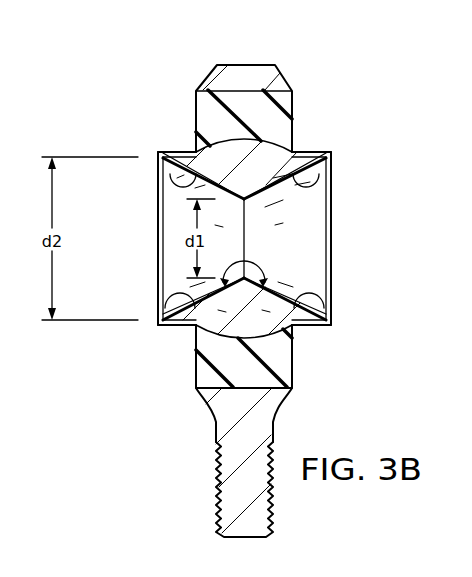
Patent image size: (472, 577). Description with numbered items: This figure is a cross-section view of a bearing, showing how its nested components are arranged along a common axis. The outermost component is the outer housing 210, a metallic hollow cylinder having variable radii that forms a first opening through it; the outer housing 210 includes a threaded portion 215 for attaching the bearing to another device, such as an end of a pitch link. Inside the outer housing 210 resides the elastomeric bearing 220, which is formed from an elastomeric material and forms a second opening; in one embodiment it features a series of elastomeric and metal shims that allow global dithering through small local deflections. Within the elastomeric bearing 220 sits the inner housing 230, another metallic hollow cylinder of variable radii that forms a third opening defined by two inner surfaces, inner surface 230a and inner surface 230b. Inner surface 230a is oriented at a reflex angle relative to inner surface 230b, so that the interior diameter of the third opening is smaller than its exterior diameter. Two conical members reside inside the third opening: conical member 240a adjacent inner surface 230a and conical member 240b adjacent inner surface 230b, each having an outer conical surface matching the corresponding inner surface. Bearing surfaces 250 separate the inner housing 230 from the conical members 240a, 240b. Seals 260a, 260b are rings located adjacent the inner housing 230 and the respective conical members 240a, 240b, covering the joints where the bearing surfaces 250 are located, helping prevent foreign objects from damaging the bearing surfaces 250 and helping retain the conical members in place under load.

The outer housing 210 is at (222, 420).
The threaded portion 215 is at (218, 502).
The elastomeric bearing 220 is at (203, 370).
The inner housing 230 is at (258, 327).
The inner surface 230a is at (163, 298).
The inner surface 230b is at (328, 298).
The conical member 240a is at (175, 253).
The conical member 240b is at (313, 255).
The bearing surfaces 250 is at (377, 225).
The seal 260a is at (157, 318).
The seal 260b is at (333, 317).